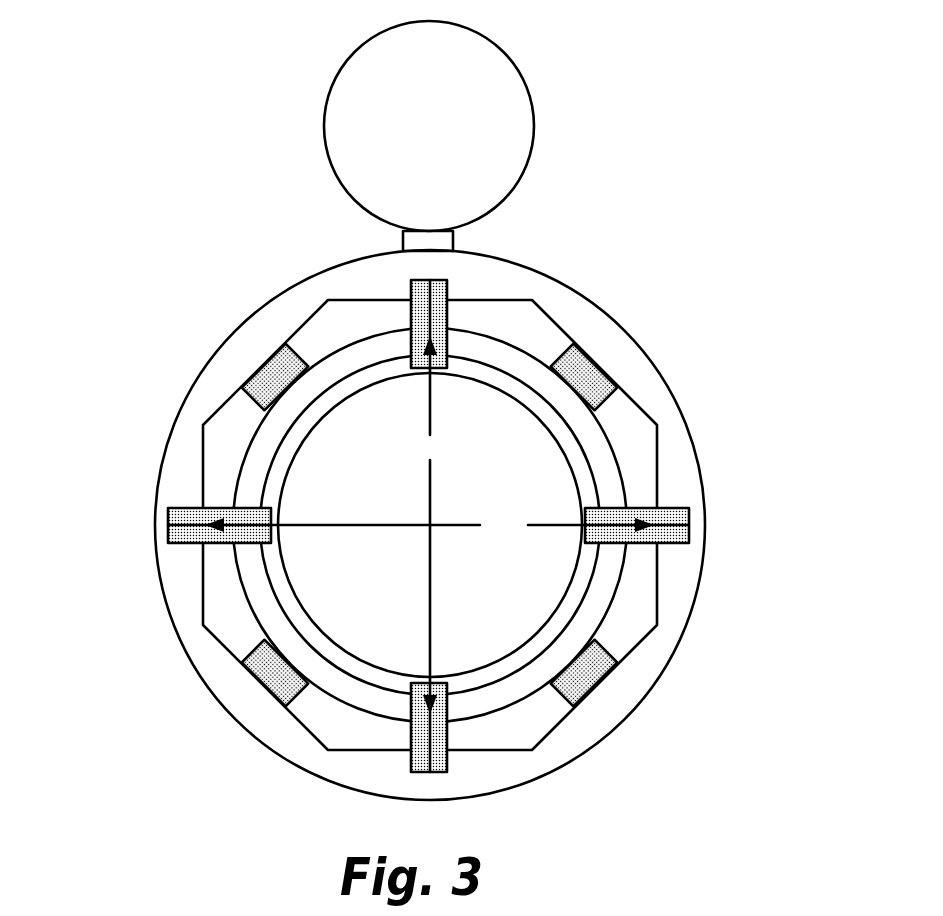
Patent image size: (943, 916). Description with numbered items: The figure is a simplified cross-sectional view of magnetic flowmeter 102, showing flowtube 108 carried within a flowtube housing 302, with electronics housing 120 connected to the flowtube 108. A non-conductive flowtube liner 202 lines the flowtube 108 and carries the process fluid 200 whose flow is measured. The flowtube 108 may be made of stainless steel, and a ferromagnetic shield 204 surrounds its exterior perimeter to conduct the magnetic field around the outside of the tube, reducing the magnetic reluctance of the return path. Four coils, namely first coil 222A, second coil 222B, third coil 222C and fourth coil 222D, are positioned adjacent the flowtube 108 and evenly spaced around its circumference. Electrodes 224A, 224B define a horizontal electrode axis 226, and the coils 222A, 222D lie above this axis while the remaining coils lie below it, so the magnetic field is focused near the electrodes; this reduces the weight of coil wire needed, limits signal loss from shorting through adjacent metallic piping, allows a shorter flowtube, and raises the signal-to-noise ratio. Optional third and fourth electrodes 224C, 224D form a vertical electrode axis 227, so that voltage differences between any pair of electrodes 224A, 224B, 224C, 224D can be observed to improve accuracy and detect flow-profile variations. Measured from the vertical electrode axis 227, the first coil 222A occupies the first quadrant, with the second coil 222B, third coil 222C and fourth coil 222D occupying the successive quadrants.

The magnetic flowmeter 102 is at (700, 158).
The flowtube 108 is at (530, 697).
The electronics housing 120 is at (510, 54).
The process fluid 200 is at (358, 486).
The non-conductive flowtube liner 202 is at (484, 652).
The ferromagnetic shield 204 is at (500, 300).
The first coil 222A is at (587, 368).
The second coil 222B is at (588, 682).
The third coil 222C is at (272, 676).
The fourth coil 222D is at (273, 372).
The first electrode 224A is at (180, 527).
The second electrode 224B is at (674, 520).
The third electrode 224C is at (410, 292).
The fourth electrode 224D is at (420, 760).
The horizontal electrode axis 226 is at (428, 527).
The vertical electrode axis 227 is at (431, 526).
The flowtube housing 302 is at (562, 767).